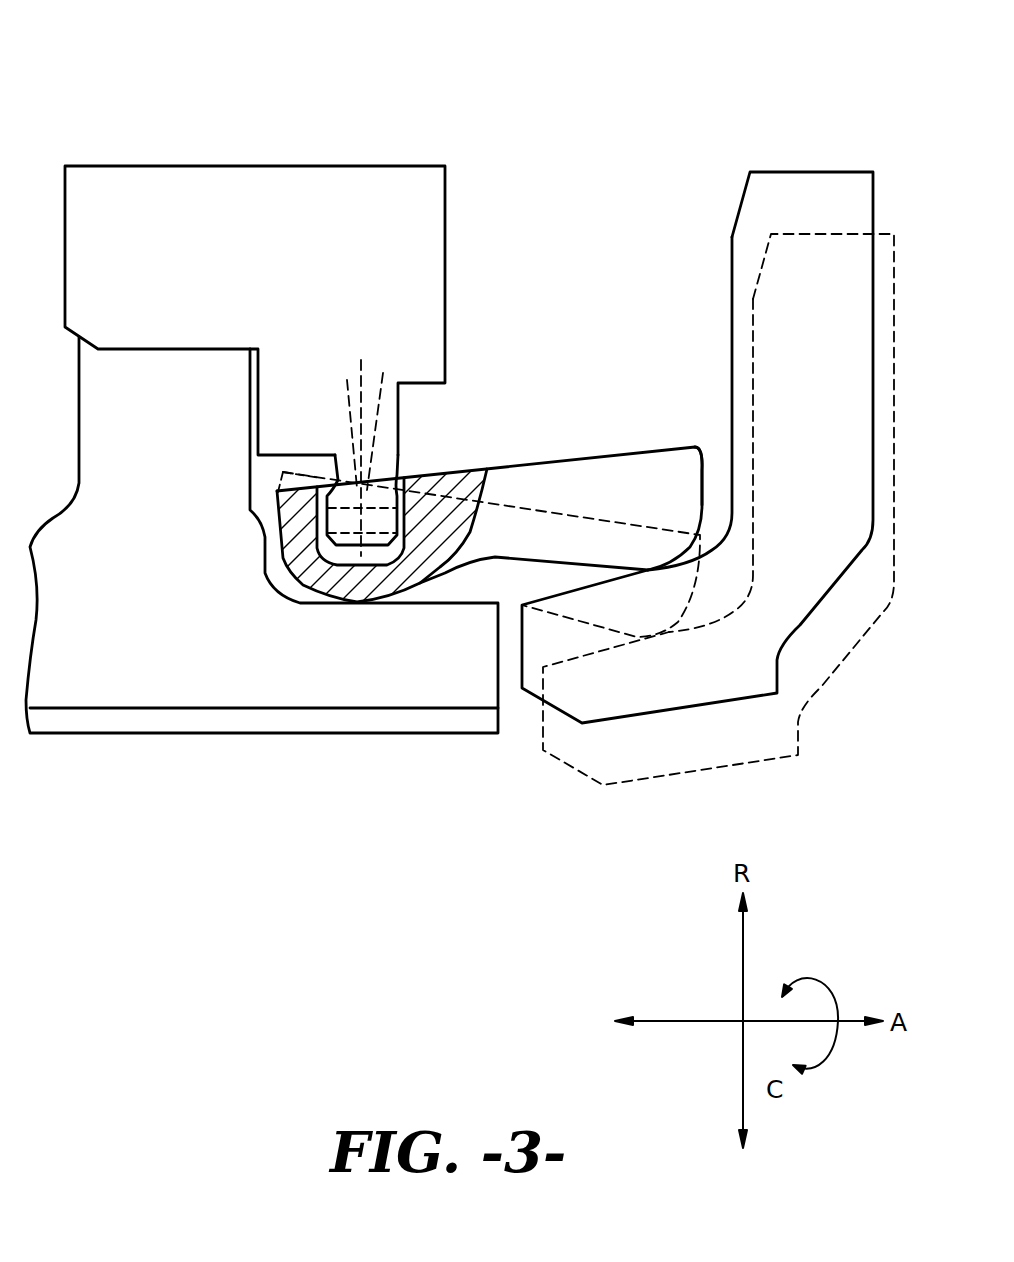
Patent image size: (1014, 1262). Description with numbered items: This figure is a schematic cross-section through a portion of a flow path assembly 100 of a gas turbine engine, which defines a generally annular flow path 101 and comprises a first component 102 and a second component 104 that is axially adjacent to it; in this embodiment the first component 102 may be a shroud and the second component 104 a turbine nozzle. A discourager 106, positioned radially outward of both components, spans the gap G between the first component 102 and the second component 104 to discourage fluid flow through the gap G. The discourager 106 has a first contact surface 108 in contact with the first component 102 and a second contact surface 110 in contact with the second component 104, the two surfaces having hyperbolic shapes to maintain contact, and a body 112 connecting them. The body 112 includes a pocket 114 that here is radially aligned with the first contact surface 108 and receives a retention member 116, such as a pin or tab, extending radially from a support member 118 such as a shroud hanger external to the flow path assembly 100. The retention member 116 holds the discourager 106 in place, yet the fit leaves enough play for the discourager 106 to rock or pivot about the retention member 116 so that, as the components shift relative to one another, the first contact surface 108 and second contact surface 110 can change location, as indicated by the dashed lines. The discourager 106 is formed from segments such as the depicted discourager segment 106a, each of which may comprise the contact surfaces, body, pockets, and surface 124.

The flow path assembly 100 is at (172, 98).
The flow path 101 is at (362, 775).
The first component 102 is at (172, 688).
The second component 104 is at (647, 698).
The discourager 106 is at (571, 398).
The discourager segment 106a is at (658, 470).
The first contact surface 108 is at (360, 603).
The second contact surface 110 is at (652, 575).
The body 112 is at (507, 485).
The pocket 114 is at (383, 555).
The retention member 116 is at (377, 518).
The support member 118 is at (320, 190).
The surface 124 is at (613, 446).
The gap G is at (510, 688).